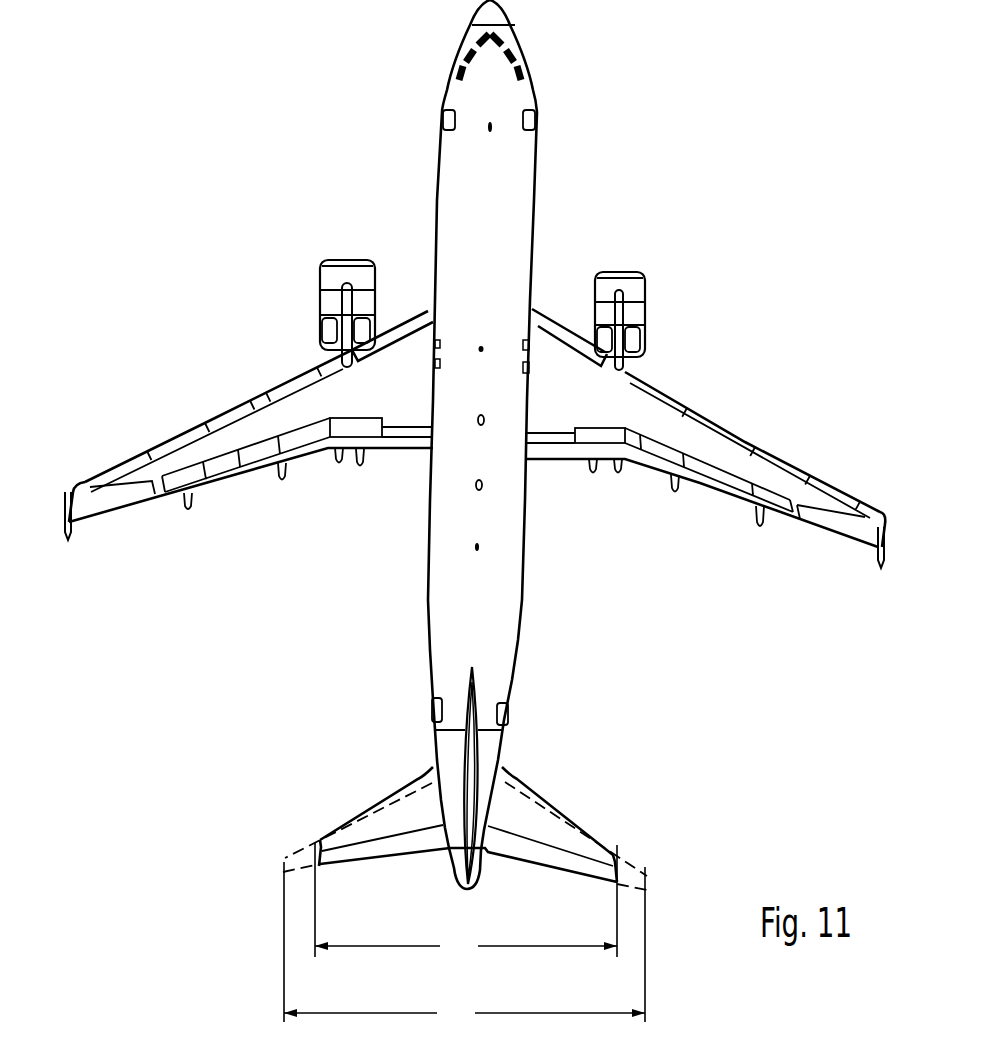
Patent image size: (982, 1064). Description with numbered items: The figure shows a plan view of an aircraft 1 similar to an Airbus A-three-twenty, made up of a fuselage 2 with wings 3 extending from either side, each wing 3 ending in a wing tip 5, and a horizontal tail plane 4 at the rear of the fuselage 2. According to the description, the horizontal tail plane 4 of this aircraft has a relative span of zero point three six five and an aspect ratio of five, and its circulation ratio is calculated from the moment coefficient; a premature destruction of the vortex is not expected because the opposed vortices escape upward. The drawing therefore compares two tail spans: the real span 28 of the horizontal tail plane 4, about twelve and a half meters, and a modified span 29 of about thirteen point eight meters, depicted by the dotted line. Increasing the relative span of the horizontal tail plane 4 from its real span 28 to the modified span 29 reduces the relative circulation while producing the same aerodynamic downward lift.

The aircraft 1 is at (557, 118).
The fuselage 2 is at (517, 205).
The wings 3 is at (253, 425).
The horizontal tail plane 4 is at (561, 805).
The wing tip 5 is at (68, 519).
The span 28 is at (466, 903).
The span 29 is at (464, 946).